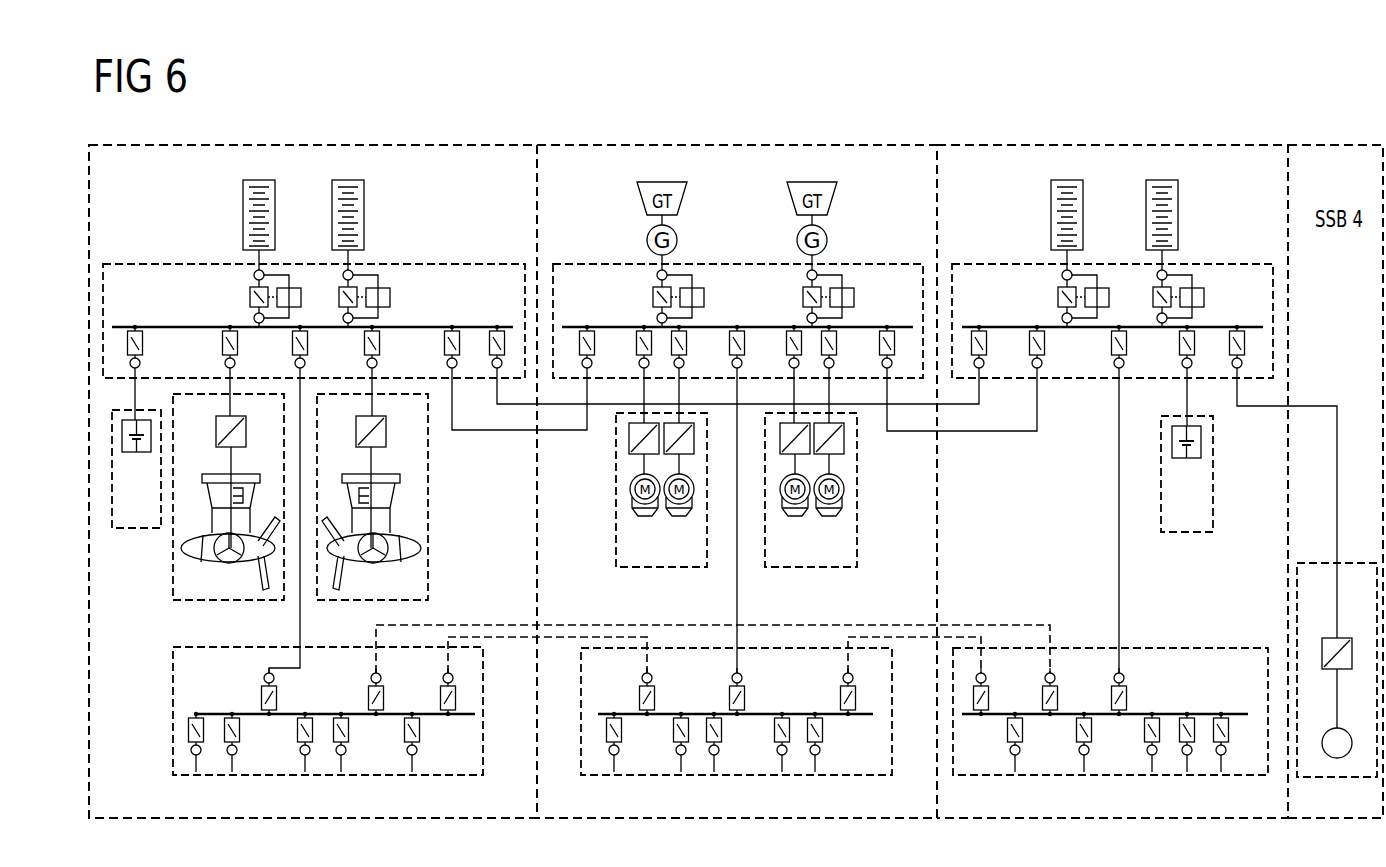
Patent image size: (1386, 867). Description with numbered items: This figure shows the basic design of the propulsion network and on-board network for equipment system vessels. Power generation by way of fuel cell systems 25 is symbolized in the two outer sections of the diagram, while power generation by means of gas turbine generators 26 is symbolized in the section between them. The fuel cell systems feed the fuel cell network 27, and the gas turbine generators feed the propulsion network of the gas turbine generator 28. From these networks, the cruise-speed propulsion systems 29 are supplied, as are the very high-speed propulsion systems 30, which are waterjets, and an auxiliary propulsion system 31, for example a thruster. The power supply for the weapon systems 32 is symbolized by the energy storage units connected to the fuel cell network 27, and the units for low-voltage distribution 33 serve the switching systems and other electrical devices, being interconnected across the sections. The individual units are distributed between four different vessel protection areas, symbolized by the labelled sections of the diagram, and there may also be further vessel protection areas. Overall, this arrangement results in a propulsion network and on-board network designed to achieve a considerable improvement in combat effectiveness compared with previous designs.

The power generation by way of fuel cell systems 25 is at (302, 155).
The power generation by means of gas turbine generators 26 is at (740, 158).
The fuel cell network 27 is at (135, 268).
The propulsion network of the gas turbine generator 28 is at (895, 273).
The cruise-speed propulsion systems 29 is at (420, 582).
The very high-speed propulsion systems 30 is at (619, 548).
The auxiliary propulsion system 31 is at (1355, 568).
The power supply for the weapon systems 32 is at (127, 522).
The units for low-voltage distribution 33 is at (180, 703).